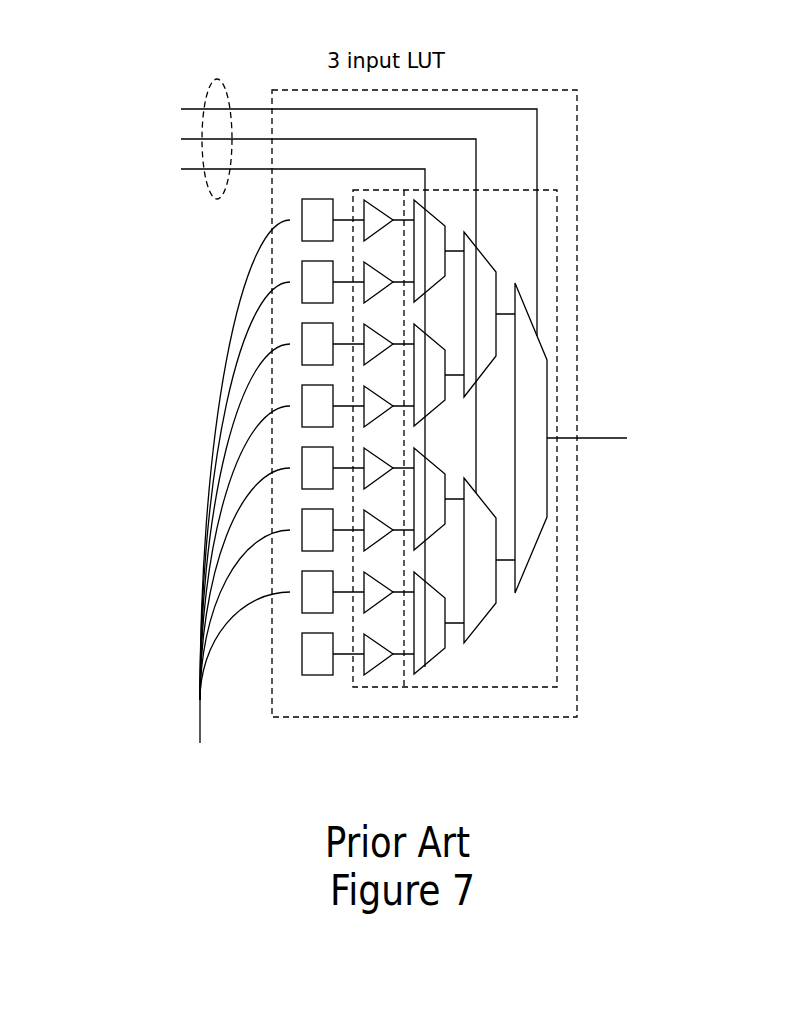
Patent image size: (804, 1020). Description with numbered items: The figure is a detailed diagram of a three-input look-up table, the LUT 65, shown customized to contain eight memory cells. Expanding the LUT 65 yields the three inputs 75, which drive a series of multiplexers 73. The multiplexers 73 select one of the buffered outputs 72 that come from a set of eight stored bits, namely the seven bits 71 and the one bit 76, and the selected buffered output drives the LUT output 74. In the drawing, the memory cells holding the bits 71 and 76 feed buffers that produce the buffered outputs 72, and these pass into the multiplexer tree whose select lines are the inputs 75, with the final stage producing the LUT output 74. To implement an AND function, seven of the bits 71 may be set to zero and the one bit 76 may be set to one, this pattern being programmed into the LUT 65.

The LUT 65 is at (577, 220).
The bits 71 is at (232, 484).
The buffered outputs 72 is at (393, 687).
The multiplexers 73 is at (484, 687).
The LUT output 74 is at (607, 438).
The inputs 75 is at (213, 199).
The bit 76 is at (313, 676).